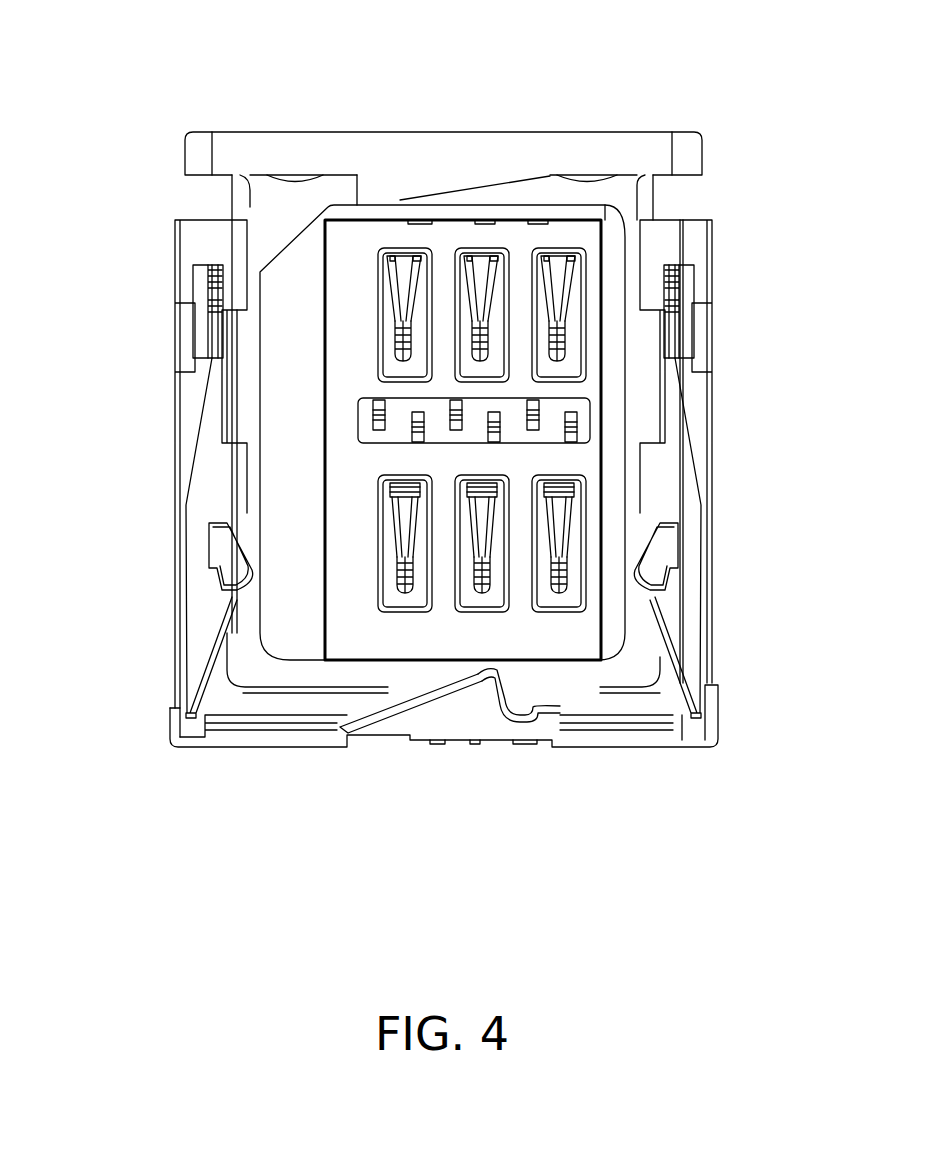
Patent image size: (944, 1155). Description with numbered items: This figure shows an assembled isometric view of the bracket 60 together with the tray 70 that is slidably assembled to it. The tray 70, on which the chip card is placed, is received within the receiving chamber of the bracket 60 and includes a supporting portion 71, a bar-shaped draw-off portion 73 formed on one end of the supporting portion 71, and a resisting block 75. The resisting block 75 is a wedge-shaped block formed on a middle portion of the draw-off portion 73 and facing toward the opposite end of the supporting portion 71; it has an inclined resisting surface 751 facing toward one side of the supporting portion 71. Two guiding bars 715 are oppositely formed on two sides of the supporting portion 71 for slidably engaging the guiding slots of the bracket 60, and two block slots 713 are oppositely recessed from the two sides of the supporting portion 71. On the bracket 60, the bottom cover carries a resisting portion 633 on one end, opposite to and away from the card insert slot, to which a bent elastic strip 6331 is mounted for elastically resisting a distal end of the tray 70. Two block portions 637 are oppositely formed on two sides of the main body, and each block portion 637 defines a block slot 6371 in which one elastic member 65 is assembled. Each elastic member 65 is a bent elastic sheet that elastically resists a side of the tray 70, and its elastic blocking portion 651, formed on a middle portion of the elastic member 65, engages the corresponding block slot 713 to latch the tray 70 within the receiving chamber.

The bracket 60 is at (707, 435).
The elastic member 65 is at (213, 442).
The tray 70 is at (628, 153).
The supporting portion 71 is at (275, 202).
The draw-off portion 73 is at (342, 157).
The resisting block 75 is at (385, 197).
The resisting portion 633 is at (390, 740).
The block portion 637 is at (177, 237).
The elastic blocking portion 651 is at (238, 567).
The block slot 713 is at (642, 538).
The guiding bar 715 is at (648, 200).
The inclined resisting surface 751 is at (478, 182).
The bent elastic strip 6331 is at (493, 687).
The block slot 6371 is at (215, 298).